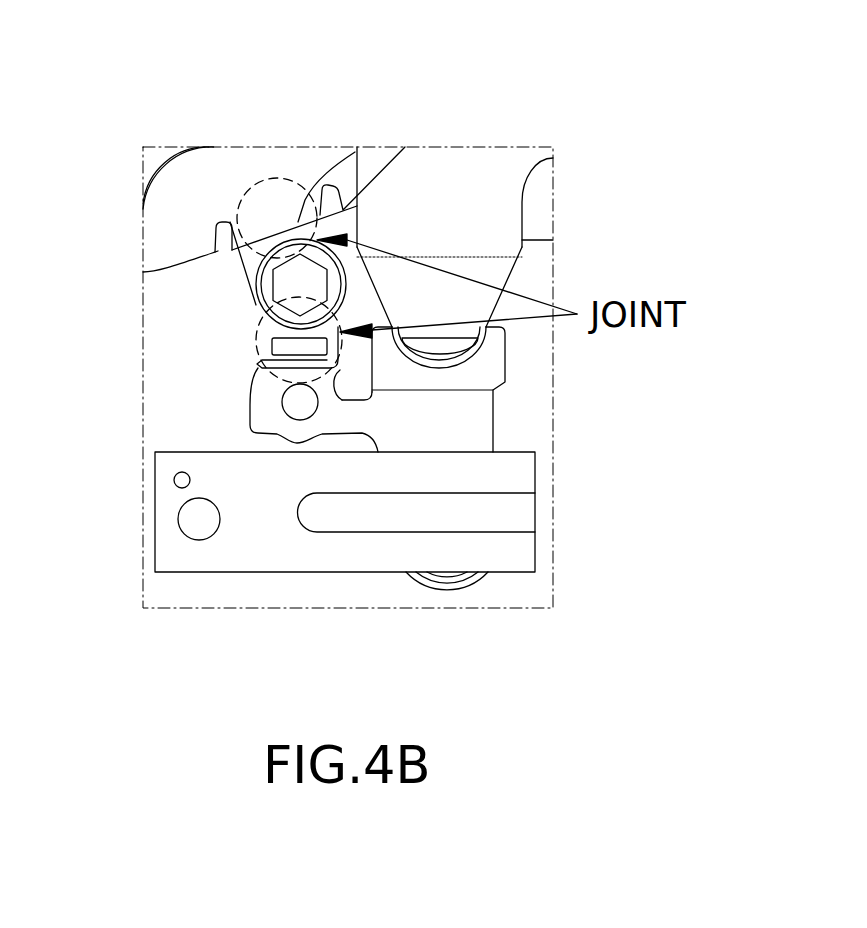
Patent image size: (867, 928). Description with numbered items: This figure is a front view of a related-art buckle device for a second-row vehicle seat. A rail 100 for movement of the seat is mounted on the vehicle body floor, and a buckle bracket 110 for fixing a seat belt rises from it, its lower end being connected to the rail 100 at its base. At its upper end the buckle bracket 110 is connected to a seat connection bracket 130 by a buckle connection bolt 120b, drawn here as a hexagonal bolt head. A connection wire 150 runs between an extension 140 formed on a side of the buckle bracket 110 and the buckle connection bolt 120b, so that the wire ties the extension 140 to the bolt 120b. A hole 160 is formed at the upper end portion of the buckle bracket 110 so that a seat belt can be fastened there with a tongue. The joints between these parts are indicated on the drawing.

The rail 100 is at (263, 535).
The buckle bracket 110 is at (383, 427).
The buckle connection bolt 120b is at (287, 282).
The seat connection bracket 130 is at (262, 168).
The extension 140 is at (262, 410).
The connection wire 150 is at (355, 152).
The hole 160 is at (450, 345).